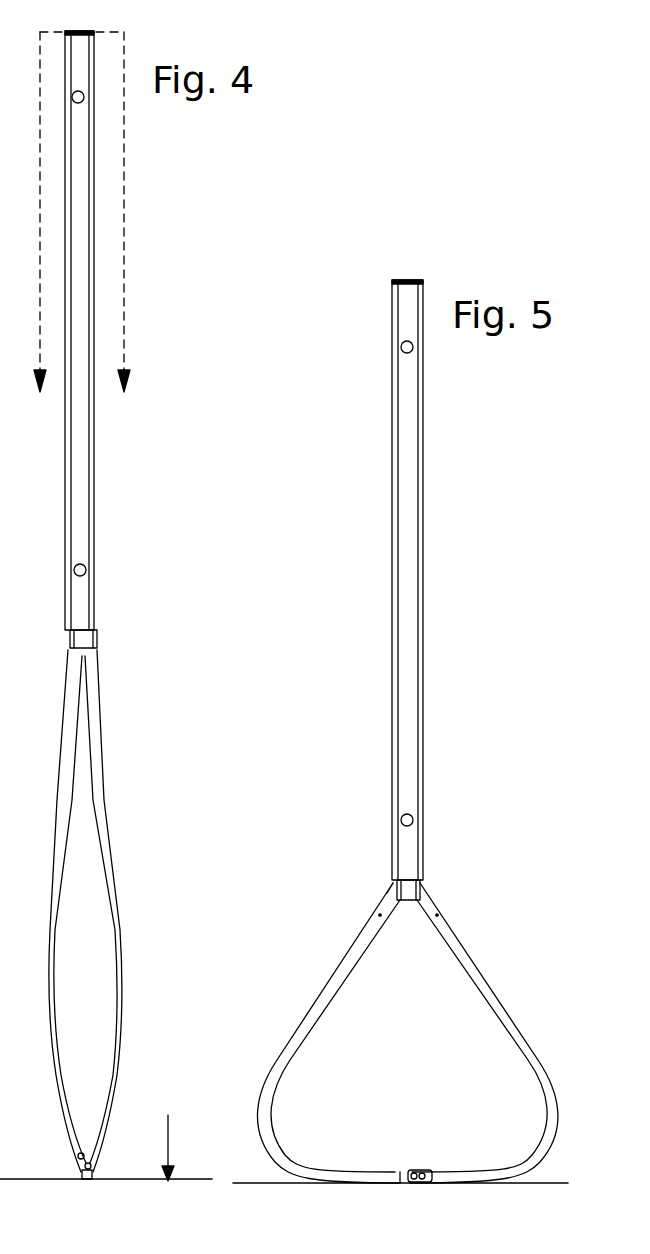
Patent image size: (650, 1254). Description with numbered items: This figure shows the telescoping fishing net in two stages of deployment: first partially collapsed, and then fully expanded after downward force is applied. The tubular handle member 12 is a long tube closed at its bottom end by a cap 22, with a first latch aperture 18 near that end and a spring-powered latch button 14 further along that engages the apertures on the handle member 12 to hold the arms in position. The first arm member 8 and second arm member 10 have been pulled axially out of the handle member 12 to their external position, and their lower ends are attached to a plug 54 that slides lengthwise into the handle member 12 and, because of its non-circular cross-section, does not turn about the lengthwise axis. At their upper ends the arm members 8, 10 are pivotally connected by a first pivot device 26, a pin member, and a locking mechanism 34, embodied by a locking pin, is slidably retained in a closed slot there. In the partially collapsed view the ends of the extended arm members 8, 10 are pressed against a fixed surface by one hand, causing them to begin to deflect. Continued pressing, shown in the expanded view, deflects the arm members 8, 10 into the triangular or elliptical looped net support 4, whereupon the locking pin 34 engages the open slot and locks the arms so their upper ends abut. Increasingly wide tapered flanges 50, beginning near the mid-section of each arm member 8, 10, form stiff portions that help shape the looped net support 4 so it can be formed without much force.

In FIG. 4, the net support 4 is at (115, 1085).
In FIG. 5, the net support 4 is at (313, 1003).
In FIG. 4, the first arm member 8 is at (56, 1070).
In FIG. 5, the first arm member 8 is at (470, 948).
In FIG. 4, the second arm member 10 is at (88, 911).
In FIG. 5, the second arm member 10 is at (400, 1033).
In FIG. 4, the tubular handle member 12 is at (83, 472).
In FIG. 5, the tubular handle member 12 is at (418, 640).
In FIG. 4, the latch button 14 is at (86, 568).
In FIG. 5, the latch button 14 is at (413, 819).
In FIG. 4, the first latch aperture 18 is at (72, 97).
In FIG. 5, the first latch aperture 18 is at (401, 347).
In FIG. 4, the cap 22 is at (86, 31).
In FIG. 5, the cap 22 is at (412, 280).
In FIG. 4, the first pivot device 26 is at (100, 1177).
In FIG. 5, the first pivot device 26 is at (418, 1186).
In FIG. 4, the locking mechanism 34 is at (78, 1158).
In FIG. 5, the locking mechanism 34 is at (421, 1170).
In FIG. 5, the tapered flanges 50 is at (340, 978).
In FIG. 4, the plug 54 is at (85, 637).
In FIG. 5, the plug 54 is at (420, 887).